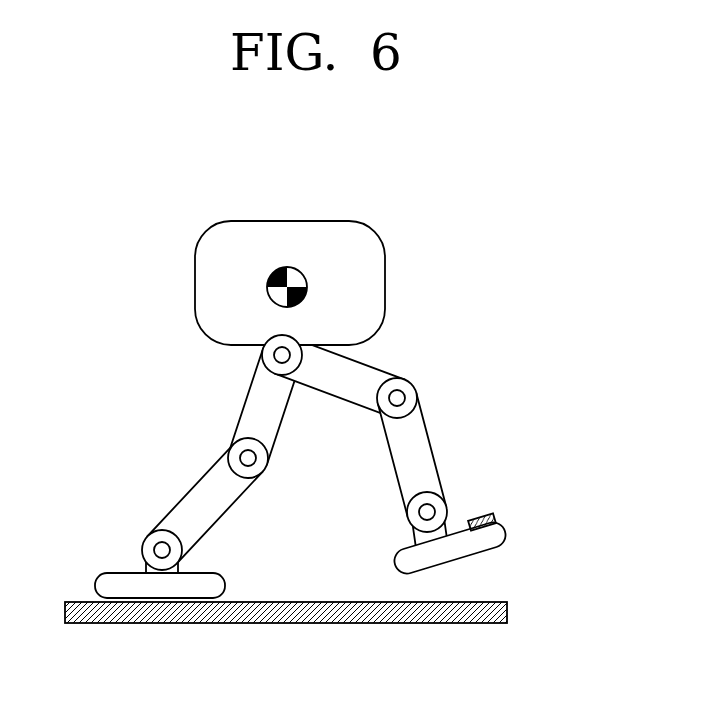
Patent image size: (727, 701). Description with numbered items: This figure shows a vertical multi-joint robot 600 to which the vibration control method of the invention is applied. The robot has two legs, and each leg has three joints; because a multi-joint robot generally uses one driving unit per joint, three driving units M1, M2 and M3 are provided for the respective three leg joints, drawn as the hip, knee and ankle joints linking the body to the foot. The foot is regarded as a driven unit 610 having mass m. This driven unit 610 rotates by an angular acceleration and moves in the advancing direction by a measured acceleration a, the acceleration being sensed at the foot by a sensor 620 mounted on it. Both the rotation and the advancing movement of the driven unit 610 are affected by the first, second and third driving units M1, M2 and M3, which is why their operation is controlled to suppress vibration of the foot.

The walking robot body 600 is at (380, 229).
The driven unit 610 is at (401, 566).
The sensor 620 is at (495, 518).
The first driving unit M1 is at (281, 355).
The second driving unit M2 is at (398, 398).
The third driving unit M3 is at (426, 512).
The mass m is at (468, 548).
The measured acceleration a is at (568, 532).